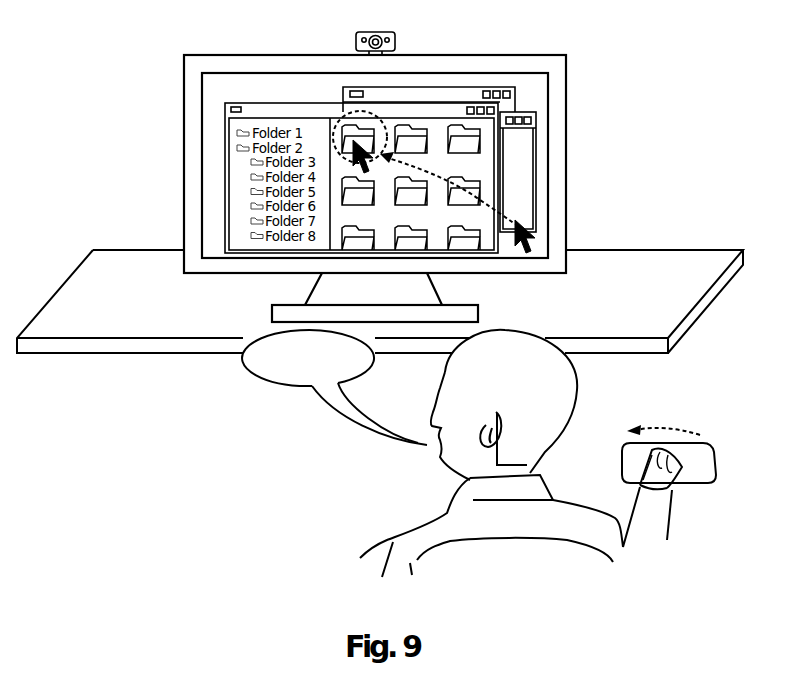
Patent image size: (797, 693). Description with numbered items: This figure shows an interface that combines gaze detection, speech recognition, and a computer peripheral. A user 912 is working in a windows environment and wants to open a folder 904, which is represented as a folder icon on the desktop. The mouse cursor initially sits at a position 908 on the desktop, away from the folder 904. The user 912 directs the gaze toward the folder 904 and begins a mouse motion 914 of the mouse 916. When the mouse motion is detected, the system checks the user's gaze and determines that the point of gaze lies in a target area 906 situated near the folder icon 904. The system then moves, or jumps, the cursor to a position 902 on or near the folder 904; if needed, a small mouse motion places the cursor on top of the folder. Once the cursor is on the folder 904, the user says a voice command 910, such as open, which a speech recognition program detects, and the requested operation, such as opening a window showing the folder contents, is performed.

The cursor position 902 is at (356, 145).
The folder 904 is at (368, 147).
The target area 906 is at (343, 136).
The mouse position 908 is at (536, 237).
The voice command 910 is at (245, 362).
The user 912 is at (387, 551).
The mouse motion 914 is at (693, 424).
The mouse 916 is at (698, 464).